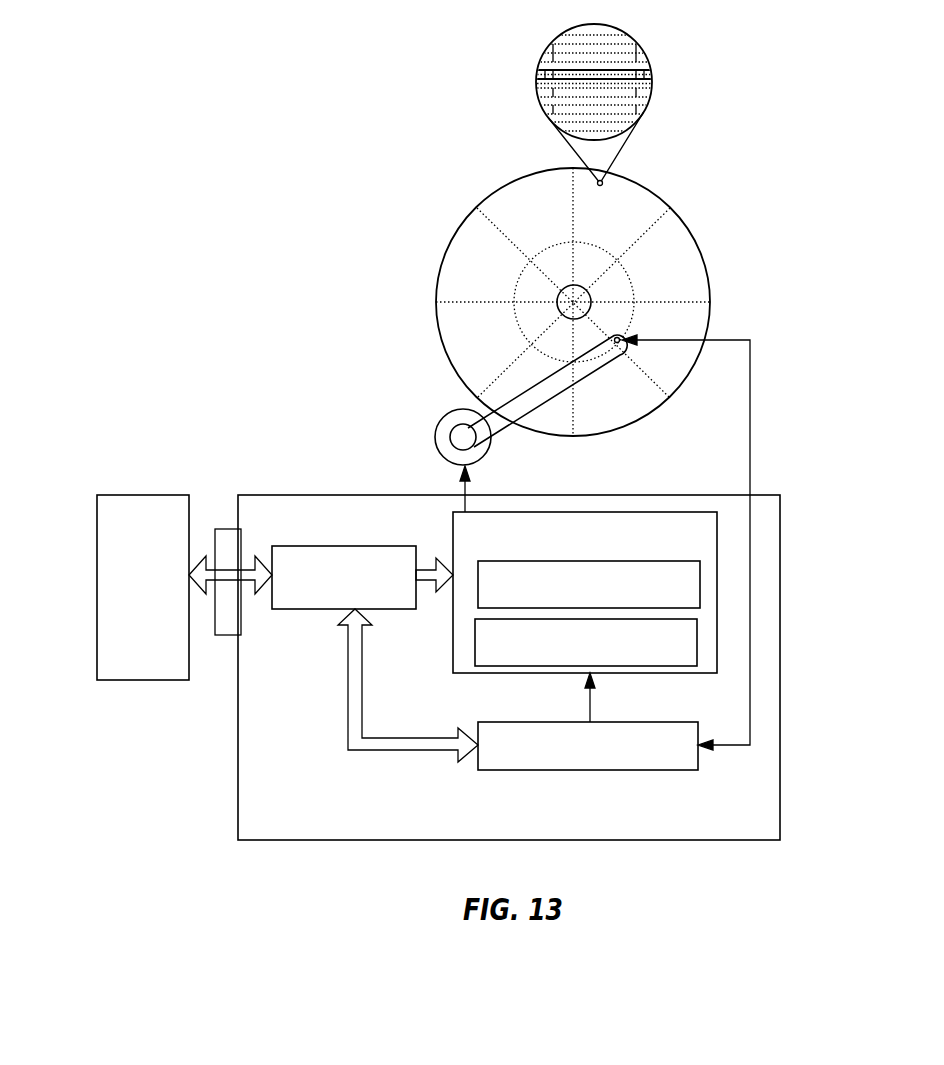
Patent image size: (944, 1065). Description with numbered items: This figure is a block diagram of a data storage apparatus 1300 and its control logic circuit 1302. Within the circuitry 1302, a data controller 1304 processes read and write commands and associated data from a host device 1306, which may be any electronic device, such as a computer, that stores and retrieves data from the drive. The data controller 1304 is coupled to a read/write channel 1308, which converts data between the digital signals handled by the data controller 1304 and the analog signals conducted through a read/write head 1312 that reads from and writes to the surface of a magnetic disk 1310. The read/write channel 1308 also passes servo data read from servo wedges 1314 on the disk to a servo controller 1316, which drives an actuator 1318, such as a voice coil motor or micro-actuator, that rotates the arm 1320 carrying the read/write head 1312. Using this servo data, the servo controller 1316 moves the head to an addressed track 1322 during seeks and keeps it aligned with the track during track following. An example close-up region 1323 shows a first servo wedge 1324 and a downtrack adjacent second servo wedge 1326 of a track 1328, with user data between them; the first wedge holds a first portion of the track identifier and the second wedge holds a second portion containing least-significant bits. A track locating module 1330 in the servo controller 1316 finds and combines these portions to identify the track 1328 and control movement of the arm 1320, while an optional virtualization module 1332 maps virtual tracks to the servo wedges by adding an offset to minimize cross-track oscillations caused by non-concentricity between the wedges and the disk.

The data storage apparatus 1300 is at (183, 237).
The control logic circuit 1302 is at (300, 494).
The data controller 1304 is at (347, 546).
The host device 1306 is at (147, 493).
The read/write channel 1308 is at (600, 770).
The magnetic disk 1310 is at (500, 194).
The read/write head 1312 is at (618, 347).
The servo wedges 1314 is at (656, 219).
The servo controller 1316 is at (540, 512).
The actuator 1318 is at (437, 432).
The arm 1320 is at (485, 408).
The track 1322 is at (517, 278).
The close-up region 1323 is at (555, 38).
The first servo wedge 1324 is at (540, 85).
The second servo wedge 1326 is at (650, 80).
The track 1328 is at (613, 83).
The track locating module 1330 is at (697, 567).
The virtualization module 1332 is at (700, 642).